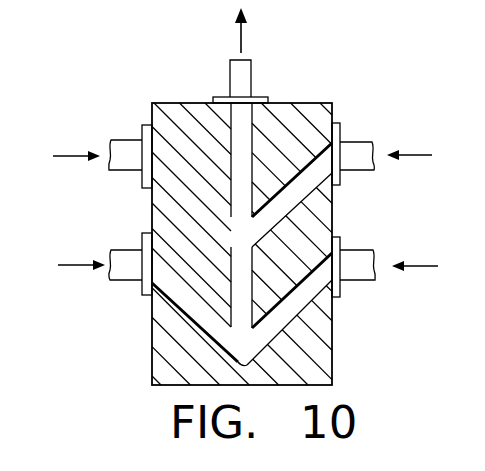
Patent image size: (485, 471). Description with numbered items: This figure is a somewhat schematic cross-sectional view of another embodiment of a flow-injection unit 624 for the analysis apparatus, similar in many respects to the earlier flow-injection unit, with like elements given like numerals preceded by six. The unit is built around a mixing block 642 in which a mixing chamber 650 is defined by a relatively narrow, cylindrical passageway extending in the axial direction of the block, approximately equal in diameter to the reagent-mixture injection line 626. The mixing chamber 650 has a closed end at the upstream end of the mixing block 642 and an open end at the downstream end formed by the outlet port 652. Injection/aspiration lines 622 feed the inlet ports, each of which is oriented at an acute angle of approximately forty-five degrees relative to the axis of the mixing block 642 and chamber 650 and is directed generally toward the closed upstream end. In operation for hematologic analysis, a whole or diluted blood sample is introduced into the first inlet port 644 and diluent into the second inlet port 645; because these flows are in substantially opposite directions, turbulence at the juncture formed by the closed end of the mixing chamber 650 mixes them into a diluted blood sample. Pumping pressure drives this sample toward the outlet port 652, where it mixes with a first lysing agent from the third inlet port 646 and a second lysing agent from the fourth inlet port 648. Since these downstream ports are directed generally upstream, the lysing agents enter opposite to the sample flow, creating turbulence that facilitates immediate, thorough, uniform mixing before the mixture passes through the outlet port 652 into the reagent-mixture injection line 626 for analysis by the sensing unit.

The injection/aspiration lines 622 is at (124, 163).
The flow-injection unit 624 is at (328, 91).
The reagent-mixture injection line 626 is at (252, 78).
The mixing block 642 is at (157, 354).
The first inlet port 644 is at (157, 283).
The second inlet port 645 is at (343, 271).
The third inlet port 646 is at (144, 163).
The fourth inlet port 648 is at (340, 157).
The mixing chamber 650 is at (248, 306).
The outlet port 652 is at (232, 105).